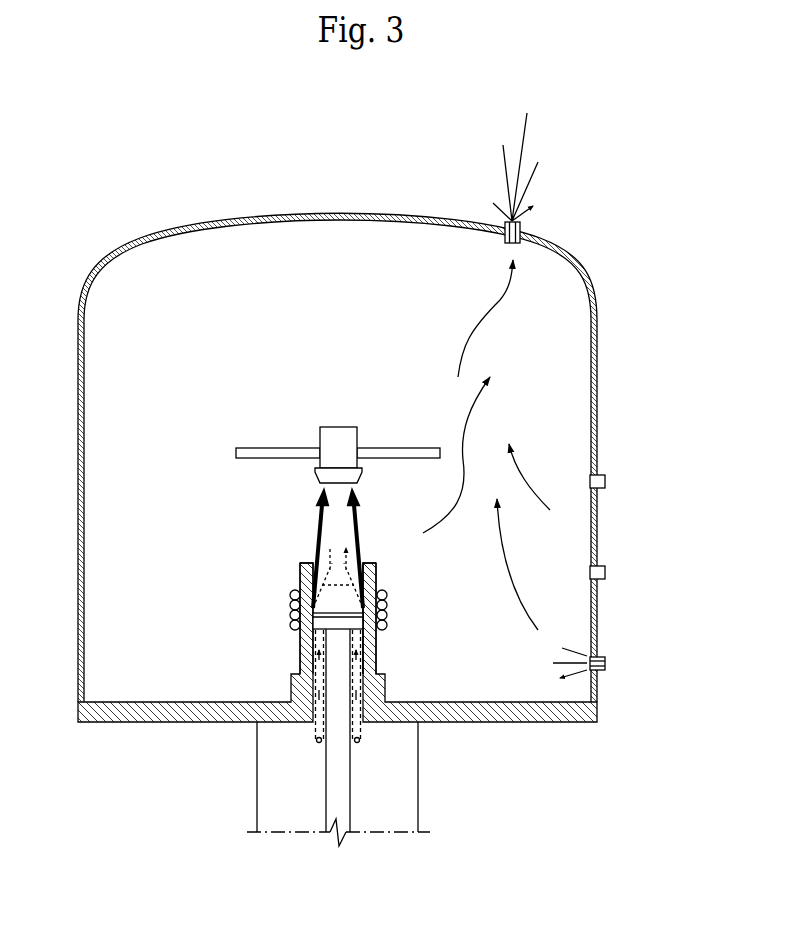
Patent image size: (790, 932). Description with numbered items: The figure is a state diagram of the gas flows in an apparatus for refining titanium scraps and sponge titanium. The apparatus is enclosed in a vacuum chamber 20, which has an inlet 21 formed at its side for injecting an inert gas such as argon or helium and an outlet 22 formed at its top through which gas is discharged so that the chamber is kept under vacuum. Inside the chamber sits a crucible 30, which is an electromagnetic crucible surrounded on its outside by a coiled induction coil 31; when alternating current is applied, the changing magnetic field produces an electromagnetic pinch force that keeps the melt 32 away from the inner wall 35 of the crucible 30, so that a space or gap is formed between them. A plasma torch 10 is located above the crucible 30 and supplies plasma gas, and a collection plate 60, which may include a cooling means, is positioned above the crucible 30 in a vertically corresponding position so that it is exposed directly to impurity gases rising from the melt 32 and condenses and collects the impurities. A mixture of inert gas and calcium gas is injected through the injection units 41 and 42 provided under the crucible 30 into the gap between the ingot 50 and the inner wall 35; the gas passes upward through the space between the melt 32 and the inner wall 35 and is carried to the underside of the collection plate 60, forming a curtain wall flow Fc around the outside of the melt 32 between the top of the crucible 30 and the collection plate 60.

The plasma torch 10 is at (322, 432).
The vacuum chamber 20 is at (117, 251).
The inlet 21 is at (607, 663).
The outlet 22 is at (521, 228).
The crucible 30 is at (295, 560).
The induction coil 31 is at (289, 614).
The melt 32 is at (340, 597).
The inner wall 35 is at (372, 657).
The injection unit 41 is at (317, 741).
The injection unit 42 is at (359, 741).
The ingot 50 is at (340, 685).
The collection plate 60 is at (410, 452).
The curtain wall flow Fc is at (328, 520).